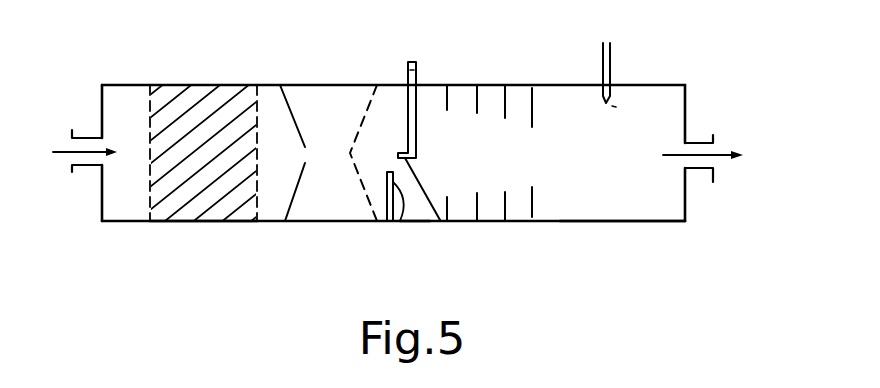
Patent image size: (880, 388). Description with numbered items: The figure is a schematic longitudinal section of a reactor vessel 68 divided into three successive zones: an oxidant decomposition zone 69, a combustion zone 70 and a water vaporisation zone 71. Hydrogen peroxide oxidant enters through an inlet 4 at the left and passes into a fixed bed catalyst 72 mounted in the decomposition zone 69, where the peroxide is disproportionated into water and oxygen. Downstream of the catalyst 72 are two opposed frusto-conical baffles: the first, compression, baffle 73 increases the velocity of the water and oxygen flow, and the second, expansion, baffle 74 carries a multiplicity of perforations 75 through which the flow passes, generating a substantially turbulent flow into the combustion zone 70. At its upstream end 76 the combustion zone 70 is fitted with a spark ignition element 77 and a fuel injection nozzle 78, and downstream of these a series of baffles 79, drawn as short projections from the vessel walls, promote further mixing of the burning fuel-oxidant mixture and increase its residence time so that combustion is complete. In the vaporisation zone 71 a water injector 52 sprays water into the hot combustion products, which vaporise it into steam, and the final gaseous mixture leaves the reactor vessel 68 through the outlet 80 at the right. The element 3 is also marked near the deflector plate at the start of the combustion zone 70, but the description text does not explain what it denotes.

The baffle plate 3 is at (418, 70).
The inlet 4 is at (70, 166).
The water injector 52 is at (612, 67).
The reactor vessel 68 is at (311, 76).
The decomposition zone 69 is at (197, 232).
The combustion zone 70 is at (411, 232).
The water vaporisation zone 71 is at (617, 231).
The fixed bed catalyst 72 is at (205, 85).
The first compression baffle 73 is at (295, 215).
The second expansion baffle 74 is at (363, 191).
The perforations 75 is at (358, 123).
The upstream end 76 is at (393, 83).
The spark ignition element 77 is at (392, 221).
The fuel injection nozzle 78 is at (440, 220).
The baffles 79 is at (480, 213).
The outlet 80 is at (696, 170).